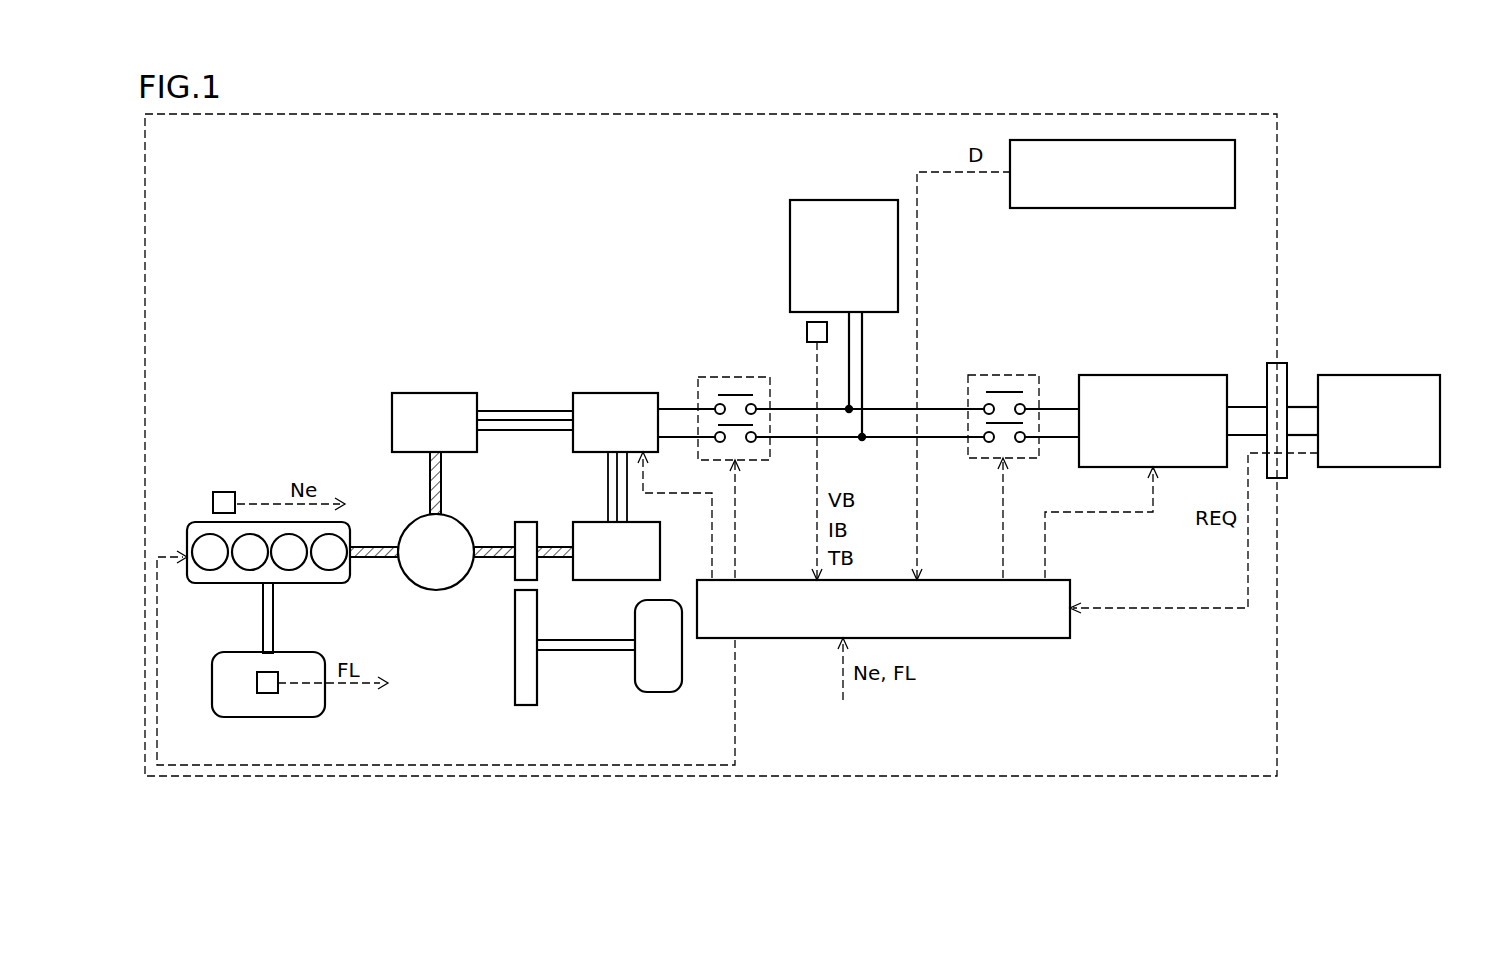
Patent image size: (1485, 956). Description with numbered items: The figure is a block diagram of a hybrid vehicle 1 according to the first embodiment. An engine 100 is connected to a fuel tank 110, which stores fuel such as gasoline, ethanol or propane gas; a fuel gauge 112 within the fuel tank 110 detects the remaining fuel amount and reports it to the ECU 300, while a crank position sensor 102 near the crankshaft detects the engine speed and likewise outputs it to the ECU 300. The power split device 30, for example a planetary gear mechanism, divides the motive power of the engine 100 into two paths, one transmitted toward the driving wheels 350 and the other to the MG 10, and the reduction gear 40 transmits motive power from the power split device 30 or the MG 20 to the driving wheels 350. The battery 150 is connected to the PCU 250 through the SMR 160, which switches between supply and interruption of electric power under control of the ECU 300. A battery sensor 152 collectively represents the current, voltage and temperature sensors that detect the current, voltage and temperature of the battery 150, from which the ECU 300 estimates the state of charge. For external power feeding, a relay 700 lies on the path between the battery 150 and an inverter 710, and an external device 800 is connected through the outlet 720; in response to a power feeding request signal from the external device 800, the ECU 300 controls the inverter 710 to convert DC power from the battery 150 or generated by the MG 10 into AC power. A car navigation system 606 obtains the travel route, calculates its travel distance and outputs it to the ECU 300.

The vehicle 1 is at (1185, 113).
The MG (Motor Generator) 10 is at (440, 393).
The MG (Motor Generator) 20 is at (614, 581).
The power split device 30 is at (435, 591).
The reduction gear 40 is at (525, 706).
The engine 100 is at (236, 584).
The crank position sensor 102 is at (223, 492).
The fuel tank 110 is at (291, 652).
The fuel gauge 112 is at (268, 693).
The battery 150 is at (865, 195).
The battery sensor 152 is at (807, 332).
The SMR (System Main Relay) 160 is at (728, 376).
The PCU (Power Control Unit) 250 is at (596, 393).
The ECU (Electronic Control Unit) 300 is at (1015, 638).
The driving wheels 350 is at (656, 693).
The car navigation system 606 is at (1200, 208).
The relay 700 is at (1020, 375).
The inverter 710 is at (1193, 375).
The outlet 720 is at (1274, 362).
The external device 800 is at (1383, 375).